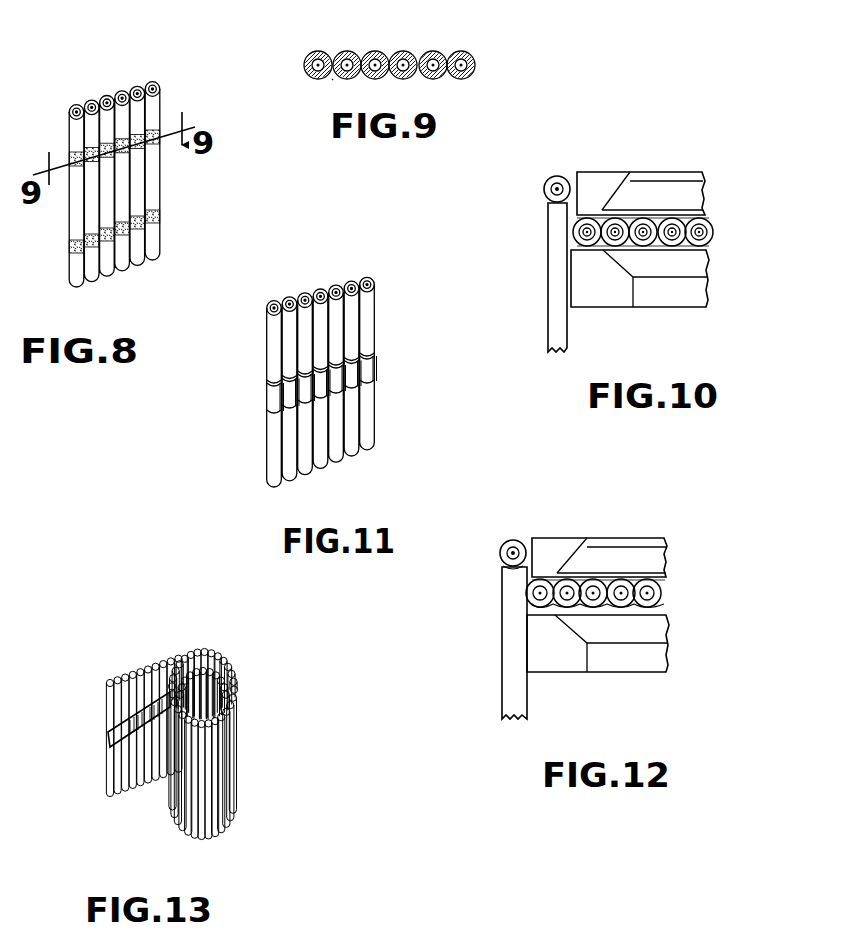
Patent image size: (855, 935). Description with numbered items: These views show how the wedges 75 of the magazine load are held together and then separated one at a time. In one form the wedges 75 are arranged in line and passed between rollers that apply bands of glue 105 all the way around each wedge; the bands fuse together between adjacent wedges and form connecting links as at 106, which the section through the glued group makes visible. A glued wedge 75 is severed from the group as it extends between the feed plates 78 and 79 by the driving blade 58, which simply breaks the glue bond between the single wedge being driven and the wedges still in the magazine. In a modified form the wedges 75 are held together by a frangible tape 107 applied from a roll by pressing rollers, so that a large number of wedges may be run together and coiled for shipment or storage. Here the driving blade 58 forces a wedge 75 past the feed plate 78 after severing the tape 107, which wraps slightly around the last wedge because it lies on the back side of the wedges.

In FIG. 8, the wedge 75 is at (152, 82).
In FIG. 9, the wedge 75 is at (435, 52).
In FIG. 10, the wedge 75 is at (544, 189).
In FIG. 11, the wedge 75 is at (273, 339).
In FIG. 12, the wedge 75 is at (508, 542).
In FIG. 13, the wedge 75 is at (213, 652).
In FIG. 8, the band of glue 105 is at (143, 152).
In FIG. 9, the band of glue 105 is at (305, 66).
In FIG. 10, the band of glue 105 is at (558, 176).
In FIG. 9, the connecting link 106 is at (332, 86).
In FIG. 11, the tape 107 is at (277, 399).
In FIG. 12, the tape 107 is at (502, 562).
In FIG. 13, the tape 107 is at (108, 737).
In FIG. 10, the feed plate 78 is at (601, 177).
In FIG. 12, the feed plate 78 is at (550, 548).
In FIG. 10, the feed plate 79 is at (603, 296).
In FIG. 10, the driving blade 58 is at (557, 291).
In FIG. 12, the driving blade 58 is at (512, 646).